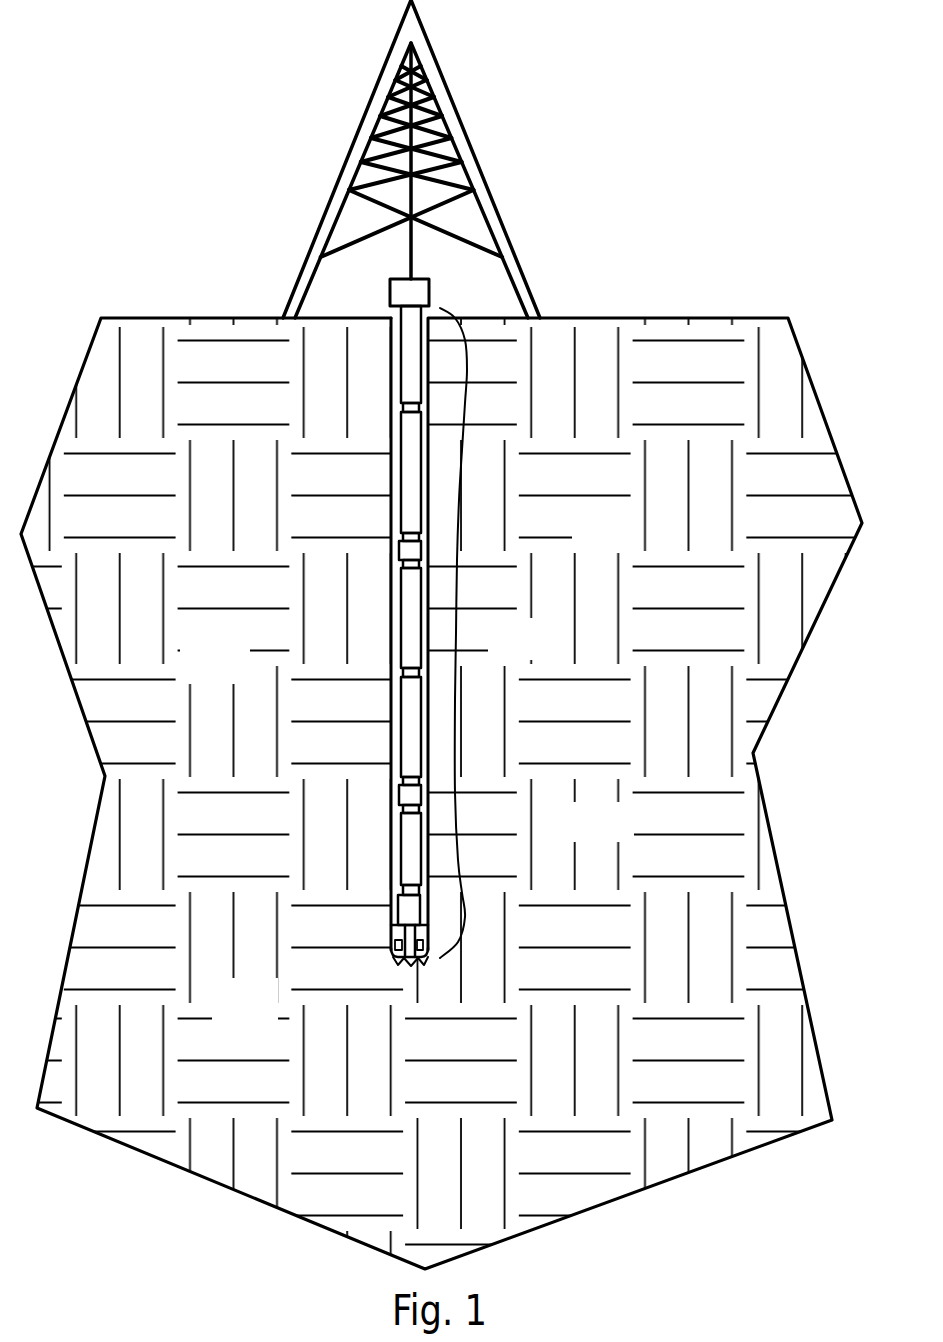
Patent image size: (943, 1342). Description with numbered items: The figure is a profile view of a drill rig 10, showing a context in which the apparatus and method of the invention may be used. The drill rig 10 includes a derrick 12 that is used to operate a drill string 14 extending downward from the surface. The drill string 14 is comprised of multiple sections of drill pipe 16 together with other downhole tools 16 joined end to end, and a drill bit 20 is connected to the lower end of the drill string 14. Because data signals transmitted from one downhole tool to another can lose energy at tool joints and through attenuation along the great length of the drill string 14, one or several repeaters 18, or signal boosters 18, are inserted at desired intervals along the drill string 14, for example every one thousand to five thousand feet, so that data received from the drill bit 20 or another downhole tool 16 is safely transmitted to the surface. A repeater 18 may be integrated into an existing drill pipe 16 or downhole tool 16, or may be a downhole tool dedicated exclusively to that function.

The drill rig 10 is at (170, 95).
The derrick 12 is at (465, 155).
The drill string 14 is at (456, 620).
The drill pipe 16 is at (410, 365).
The repeater 18 is at (410, 547).
The drill bit 20 is at (392, 937).